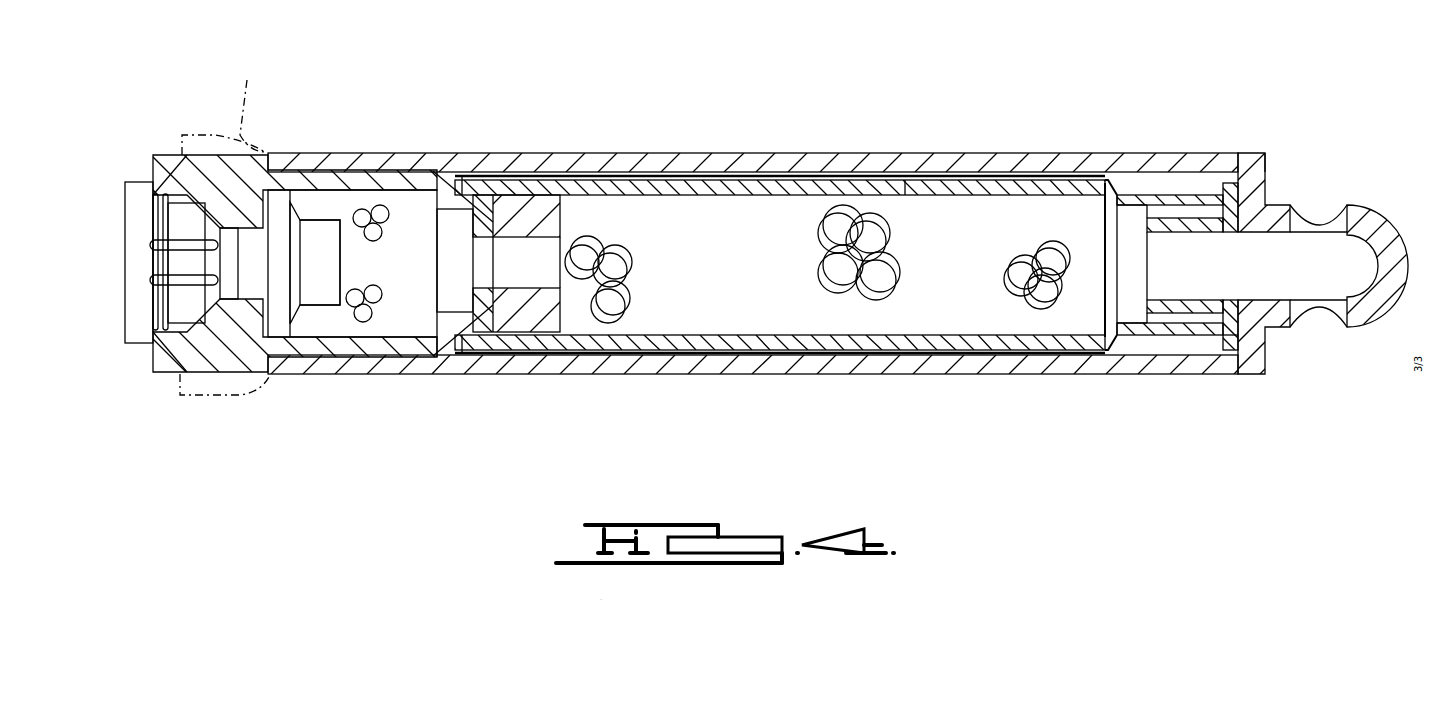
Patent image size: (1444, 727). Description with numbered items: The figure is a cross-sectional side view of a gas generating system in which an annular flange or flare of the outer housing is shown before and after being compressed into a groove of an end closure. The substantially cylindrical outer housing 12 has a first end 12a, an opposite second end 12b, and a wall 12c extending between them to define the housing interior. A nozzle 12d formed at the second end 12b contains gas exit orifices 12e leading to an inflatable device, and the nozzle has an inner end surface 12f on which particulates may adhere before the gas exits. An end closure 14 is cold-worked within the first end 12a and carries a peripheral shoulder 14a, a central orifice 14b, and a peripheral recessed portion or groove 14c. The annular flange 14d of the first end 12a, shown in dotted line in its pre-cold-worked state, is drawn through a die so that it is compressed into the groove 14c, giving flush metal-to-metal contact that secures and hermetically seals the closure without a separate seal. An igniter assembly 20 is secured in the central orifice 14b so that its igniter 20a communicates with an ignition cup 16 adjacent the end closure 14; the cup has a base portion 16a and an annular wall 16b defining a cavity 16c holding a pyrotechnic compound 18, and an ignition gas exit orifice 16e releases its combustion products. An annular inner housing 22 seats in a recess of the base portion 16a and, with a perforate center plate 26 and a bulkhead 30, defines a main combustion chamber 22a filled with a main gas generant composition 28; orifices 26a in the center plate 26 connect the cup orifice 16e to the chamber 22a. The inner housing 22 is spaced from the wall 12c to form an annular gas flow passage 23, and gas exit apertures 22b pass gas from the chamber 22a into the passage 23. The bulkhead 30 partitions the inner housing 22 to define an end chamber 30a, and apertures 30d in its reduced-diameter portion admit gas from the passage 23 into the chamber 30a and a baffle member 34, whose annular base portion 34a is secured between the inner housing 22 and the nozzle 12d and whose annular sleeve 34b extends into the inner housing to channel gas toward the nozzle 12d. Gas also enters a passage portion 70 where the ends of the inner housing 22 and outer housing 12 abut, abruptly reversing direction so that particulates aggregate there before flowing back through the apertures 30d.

The outer housing 12 is at (541, 153).
The first end 12a is at (205, 150).
The second end 12b is at (1267, 374).
The wall 12c is at (543, 375).
The nozzle 12d is at (1410, 198).
The gas exit orifices 12e is at (1320, 226).
The inner end surface 12f is at (1366, 290).
The end closure 14 is at (123, 184).
The peripheral shoulder 14a is at (287, 346).
The central orifice 14b is at (157, 348).
The peripheral cavity 14c is at (203, 345).
The annular flange 14d is at (212, 155).
The ignition cup 16 is at (437, 192).
The base portion 16a is at (440, 342).
The annular wall 16b is at (383, 355).
The cavity 16c is at (387, 204).
The ignition gas exit orifice 16e is at (473, 262).
The pyrotechnic compound 18 is at (360, 322).
The igniter assembly 20 is at (175, 236).
The igniter 20a is at (282, 202).
The inner housing 22 is at (730, 156).
The main combustion chamber 22a is at (800, 313).
The gas exit apertures 22b is at (906, 186).
The annular gas flow passage 23 is at (793, 166).
The center plate 26 is at (548, 200).
The orifice 26a is at (570, 240).
The main gas generant composition 28 is at (622, 275).
The bulkhead 30 is at (1100, 335).
The chamber 30a is at (1133, 305).
The apertures 30d is at (1188, 200).
The baffle member 34 is at (1160, 212).
The annular base portion 34a is at (1232, 330).
The annular sleeve 34b is at (1212, 338).
The passage portion 70 is at (1263, 162).